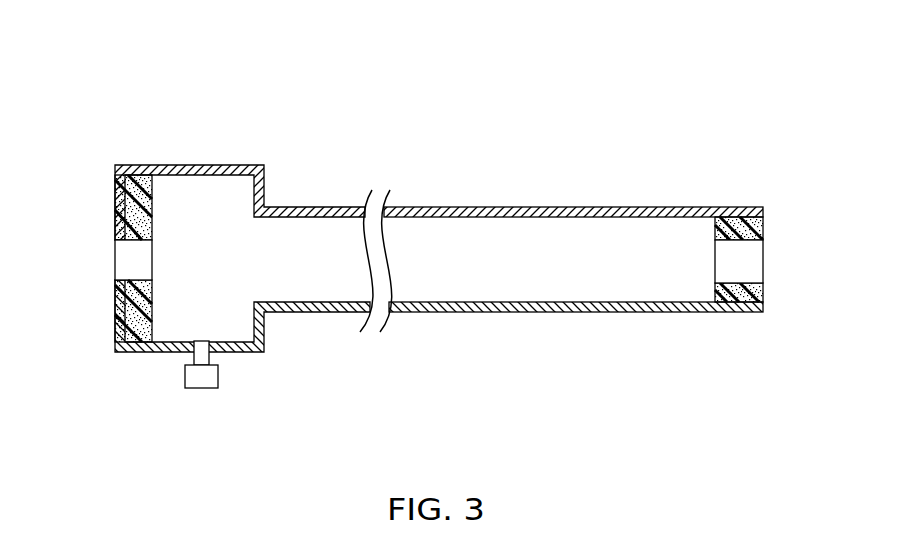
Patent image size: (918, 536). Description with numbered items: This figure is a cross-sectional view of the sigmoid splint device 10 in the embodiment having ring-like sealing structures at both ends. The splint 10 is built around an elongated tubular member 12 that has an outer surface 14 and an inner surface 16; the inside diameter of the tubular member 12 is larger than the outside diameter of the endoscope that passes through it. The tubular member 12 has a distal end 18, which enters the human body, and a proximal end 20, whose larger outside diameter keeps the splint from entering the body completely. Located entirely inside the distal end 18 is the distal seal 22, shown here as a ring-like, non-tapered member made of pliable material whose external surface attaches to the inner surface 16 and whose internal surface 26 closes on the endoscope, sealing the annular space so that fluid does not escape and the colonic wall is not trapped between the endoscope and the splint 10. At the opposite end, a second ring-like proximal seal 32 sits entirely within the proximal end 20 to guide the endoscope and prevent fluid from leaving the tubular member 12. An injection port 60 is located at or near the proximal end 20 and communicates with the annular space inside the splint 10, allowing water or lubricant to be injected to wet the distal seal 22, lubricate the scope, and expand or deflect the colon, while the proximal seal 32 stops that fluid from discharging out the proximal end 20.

The sigmoid splint device 10 is at (424, 172).
The elongated tubular member 12 is at (452, 314).
The outer surface 14 is at (570, 313).
The inner surface 16 is at (515, 302).
The distal end 18 is at (680, 213).
The proximal end 20 is at (183, 165).
The distal seal 22 is at (768, 226).
The internal surface 26 is at (748, 268).
The proximal seal 32 is at (118, 198).
The injection port 60 is at (210, 389).